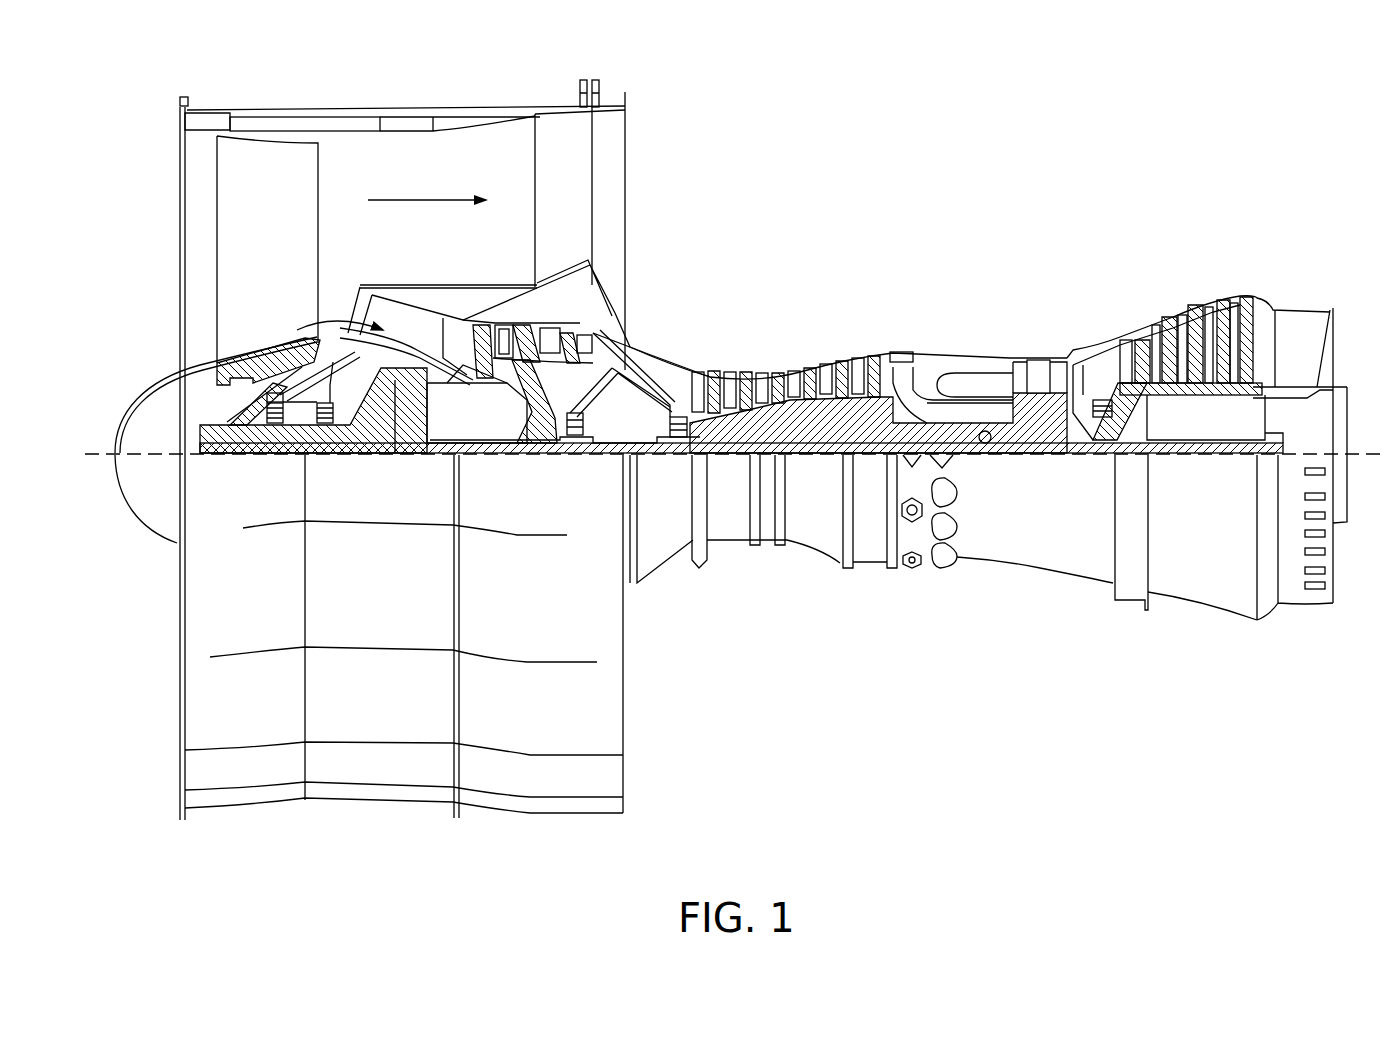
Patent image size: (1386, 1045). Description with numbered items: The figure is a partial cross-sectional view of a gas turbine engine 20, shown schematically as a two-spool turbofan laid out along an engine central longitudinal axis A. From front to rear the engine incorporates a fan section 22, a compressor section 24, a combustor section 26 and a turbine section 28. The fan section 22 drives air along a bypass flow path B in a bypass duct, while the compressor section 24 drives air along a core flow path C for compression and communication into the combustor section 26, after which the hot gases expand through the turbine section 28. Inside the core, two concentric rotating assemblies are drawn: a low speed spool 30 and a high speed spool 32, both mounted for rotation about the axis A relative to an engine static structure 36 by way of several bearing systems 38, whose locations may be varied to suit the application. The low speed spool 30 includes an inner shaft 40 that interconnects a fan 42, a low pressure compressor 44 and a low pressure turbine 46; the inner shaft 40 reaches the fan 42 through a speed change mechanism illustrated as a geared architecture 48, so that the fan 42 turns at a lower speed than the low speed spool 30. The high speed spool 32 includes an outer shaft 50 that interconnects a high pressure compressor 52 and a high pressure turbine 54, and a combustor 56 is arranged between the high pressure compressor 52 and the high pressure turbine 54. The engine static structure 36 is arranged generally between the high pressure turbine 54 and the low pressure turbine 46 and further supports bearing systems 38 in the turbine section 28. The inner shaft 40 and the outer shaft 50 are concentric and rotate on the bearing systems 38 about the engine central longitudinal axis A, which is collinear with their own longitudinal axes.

The gas turbine engine 20 is at (735, 419).
The fan section 22 is at (290, 92).
The compressor section 24 is at (878, 322).
The combustor section 26 is at (978, 338).
The turbine section 28 is at (1207, 390).
The low speed spool 30 is at (830, 462).
The high speed spool 32 is at (877, 417).
The engine static structure 36 is at (873, 572).
The bearing systems 38 is at (277, 417).
The inner shaft 40 is at (645, 454).
The fan 42 is at (278, 244).
The low pressure compressor 44 is at (546, 333).
The low pressure turbine 46 is at (1193, 315).
The geared architecture 48 is at (405, 455).
The outer shaft 50 is at (990, 443).
The high pressure compressor 52 is at (777, 423).
The high pressure turbine 54 is at (1040, 352).
The combustor 56 is at (967, 378).
The engine central longitudinal axis A is at (1362, 447).
The bypass flow path B is at (428, 203).
The core flow path C is at (313, 327).